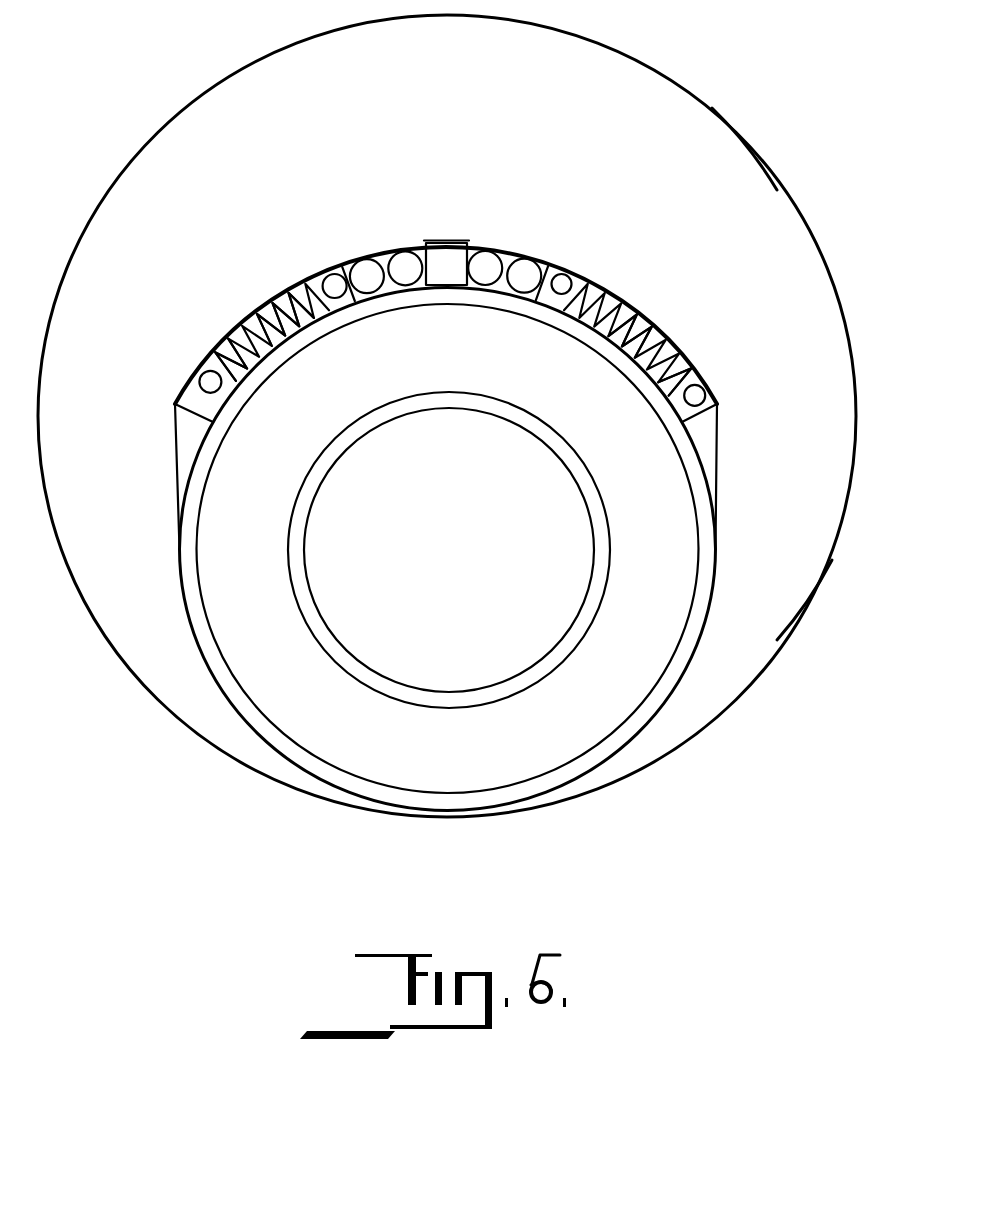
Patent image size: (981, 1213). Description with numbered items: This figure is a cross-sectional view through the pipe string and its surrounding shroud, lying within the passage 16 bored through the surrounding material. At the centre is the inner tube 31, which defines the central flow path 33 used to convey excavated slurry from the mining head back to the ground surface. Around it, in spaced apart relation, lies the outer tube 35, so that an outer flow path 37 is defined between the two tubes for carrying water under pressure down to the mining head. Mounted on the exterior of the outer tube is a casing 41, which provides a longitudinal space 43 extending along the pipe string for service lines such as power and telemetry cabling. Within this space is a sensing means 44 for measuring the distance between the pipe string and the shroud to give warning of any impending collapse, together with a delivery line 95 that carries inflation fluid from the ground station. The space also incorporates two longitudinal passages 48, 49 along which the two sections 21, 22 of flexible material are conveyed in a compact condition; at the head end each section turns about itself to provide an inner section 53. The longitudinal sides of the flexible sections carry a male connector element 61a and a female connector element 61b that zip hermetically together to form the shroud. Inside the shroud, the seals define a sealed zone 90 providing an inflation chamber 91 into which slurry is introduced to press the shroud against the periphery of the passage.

The passage 16 is at (693, 100).
The inflation chamber 91 is at (740, 150).
The sealed zone 90 is at (798, 593).
The casing 41 is at (590, 276).
The outer tube 35 is at (652, 704).
The outer flow path 37 is at (448, 548).
The central flow path 33 is at (449, 550).
The inner tube 31 is at (533, 668).
The sensing means 44 is at (453, 252).
The longitudinal space 43 is at (375, 258).
The delivery line 95 is at (497, 263).
The male connector element 61a is at (330, 278).
The female connector element 61b is at (202, 377).
The section of flexible material 21 is at (262, 305).
The section of flexible material 22 is at (641, 330).
The inner section 53 is at (305, 290).
The longitudinal passage 48 is at (230, 340).
The longitudinal passage 49 is at (683, 363).